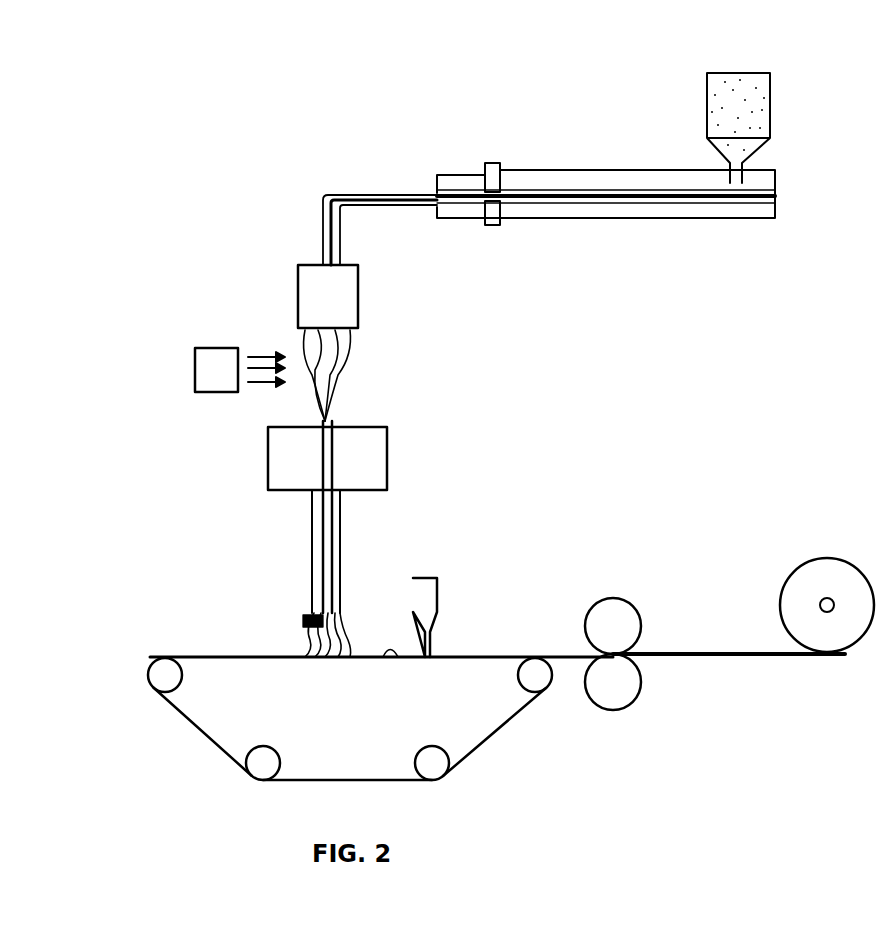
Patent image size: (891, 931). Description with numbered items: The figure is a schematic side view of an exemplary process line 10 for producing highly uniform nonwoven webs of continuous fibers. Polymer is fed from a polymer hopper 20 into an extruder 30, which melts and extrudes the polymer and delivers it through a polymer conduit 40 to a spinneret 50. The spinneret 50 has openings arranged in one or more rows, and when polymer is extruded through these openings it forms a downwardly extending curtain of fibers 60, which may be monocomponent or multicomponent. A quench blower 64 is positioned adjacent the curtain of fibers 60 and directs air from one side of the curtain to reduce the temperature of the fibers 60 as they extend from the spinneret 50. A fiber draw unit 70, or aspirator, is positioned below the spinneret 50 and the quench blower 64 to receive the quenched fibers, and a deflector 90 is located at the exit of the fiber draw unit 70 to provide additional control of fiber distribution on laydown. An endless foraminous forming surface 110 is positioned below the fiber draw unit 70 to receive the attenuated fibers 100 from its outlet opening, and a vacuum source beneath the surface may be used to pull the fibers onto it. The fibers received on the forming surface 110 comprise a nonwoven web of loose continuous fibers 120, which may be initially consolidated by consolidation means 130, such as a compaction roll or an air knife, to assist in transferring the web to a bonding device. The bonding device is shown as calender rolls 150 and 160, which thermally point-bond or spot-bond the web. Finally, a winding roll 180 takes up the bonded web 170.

The process line 10 is at (293, 71).
The polymer hopper 20 is at (748, 70).
The extruder 30 is at (548, 167).
The polymer conduit 40 is at (357, 188).
The spinneret 50 is at (360, 293).
The fibers 60 is at (352, 368).
The quench blower 64 is at (213, 356).
The fiber draw unit 70 is at (372, 427).
The deflector 90 is at (300, 622).
The attenuated fibers 100 is at (350, 631).
The endless foraminous forming surface 110 is at (193, 655).
The nonwoven web of loose continuous fibers 120 is at (381, 660).
The consolidation means 130 is at (437, 592).
The calender roll 150 is at (600, 598).
The calender roll 160 is at (614, 713).
The bonded web 170 is at (693, 650).
The winding roll 180 is at (838, 645).